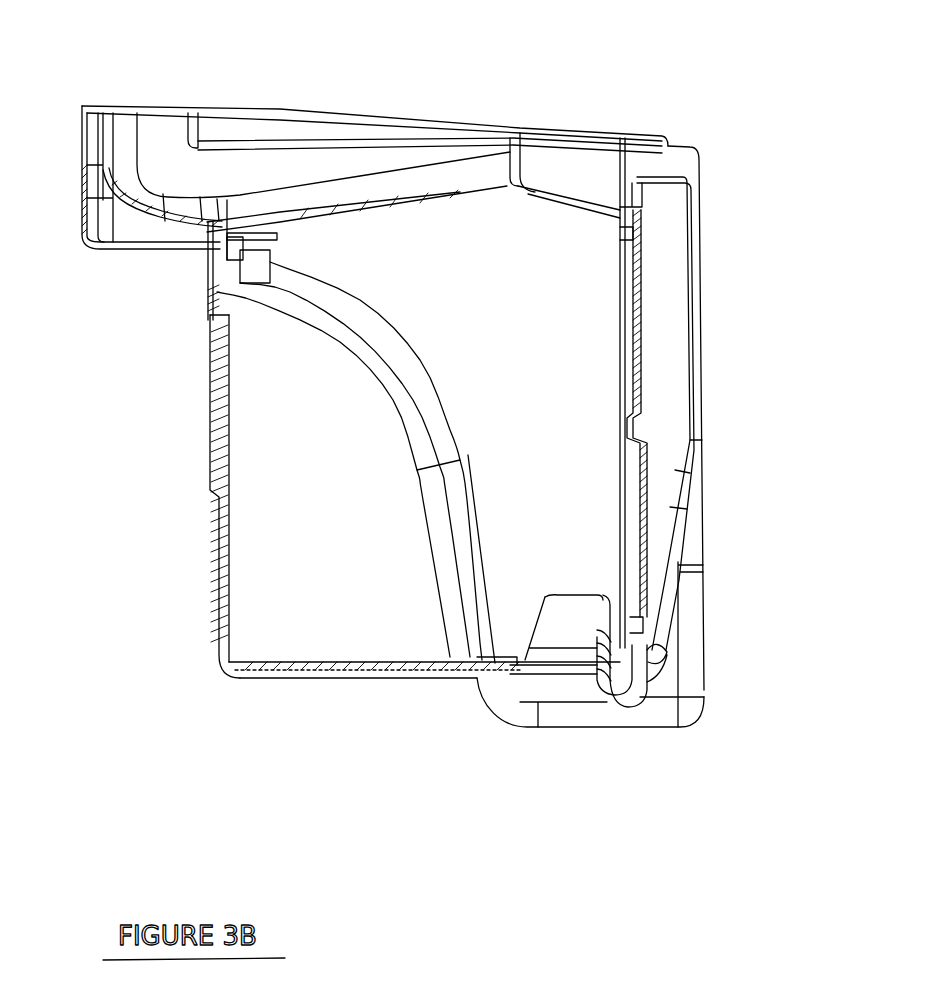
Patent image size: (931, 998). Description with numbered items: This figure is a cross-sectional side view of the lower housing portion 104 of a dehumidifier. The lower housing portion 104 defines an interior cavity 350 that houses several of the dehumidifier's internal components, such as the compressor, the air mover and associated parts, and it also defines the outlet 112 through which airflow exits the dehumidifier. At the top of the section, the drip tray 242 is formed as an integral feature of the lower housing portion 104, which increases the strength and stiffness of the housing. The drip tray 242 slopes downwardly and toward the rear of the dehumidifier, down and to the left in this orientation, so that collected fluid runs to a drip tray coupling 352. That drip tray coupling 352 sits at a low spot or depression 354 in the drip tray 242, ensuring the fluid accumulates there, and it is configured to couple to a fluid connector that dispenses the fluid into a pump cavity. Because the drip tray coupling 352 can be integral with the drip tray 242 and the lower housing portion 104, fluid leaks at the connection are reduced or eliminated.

The lower housing portion 104 is at (388, 680).
The outlet 112 is at (694, 292).
The drip tray 242 is at (328, 205).
The interior cavity 350 is at (232, 538).
The drip tray coupling 352 is at (245, 265).
The depression 354 is at (277, 237).